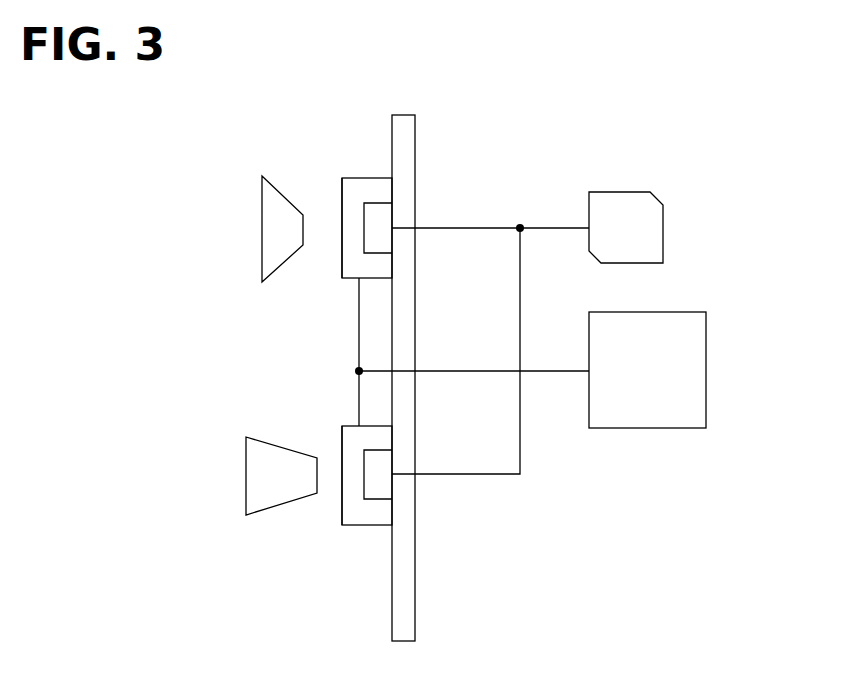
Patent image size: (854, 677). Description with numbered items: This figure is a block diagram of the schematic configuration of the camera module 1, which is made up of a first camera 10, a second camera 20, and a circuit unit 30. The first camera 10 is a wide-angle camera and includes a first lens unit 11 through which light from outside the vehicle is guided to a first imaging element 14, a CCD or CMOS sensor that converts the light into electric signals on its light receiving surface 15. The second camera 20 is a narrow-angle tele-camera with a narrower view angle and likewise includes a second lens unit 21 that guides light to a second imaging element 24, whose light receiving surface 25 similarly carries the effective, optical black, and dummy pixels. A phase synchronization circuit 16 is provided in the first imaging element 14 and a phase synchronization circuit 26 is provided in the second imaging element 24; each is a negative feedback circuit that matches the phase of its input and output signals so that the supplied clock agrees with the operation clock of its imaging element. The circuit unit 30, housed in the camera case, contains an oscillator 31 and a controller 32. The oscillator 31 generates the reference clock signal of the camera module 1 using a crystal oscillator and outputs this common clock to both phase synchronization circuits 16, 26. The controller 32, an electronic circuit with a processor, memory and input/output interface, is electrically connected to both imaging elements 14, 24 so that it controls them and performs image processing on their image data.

The camera module 1 is at (579, 104).
The first camera 10 is at (174, 120).
The first lens unit 11 is at (262, 201).
The first imaging element 14 is at (355, 178).
The light receiving surface 15 is at (342, 200).
The phase synchronization circuit 16 is at (381, 203).
The second camera 20 is at (176, 397).
The second lens unit 21 is at (246, 458).
The second imaging element 24 is at (355, 526).
The light receiving surface 25 is at (342, 503).
The phase synchronization circuit 26 is at (381, 500).
The circuit unit 30 is at (762, 200).
The oscillator 31 is at (663, 224).
The controller 32 is at (706, 347).